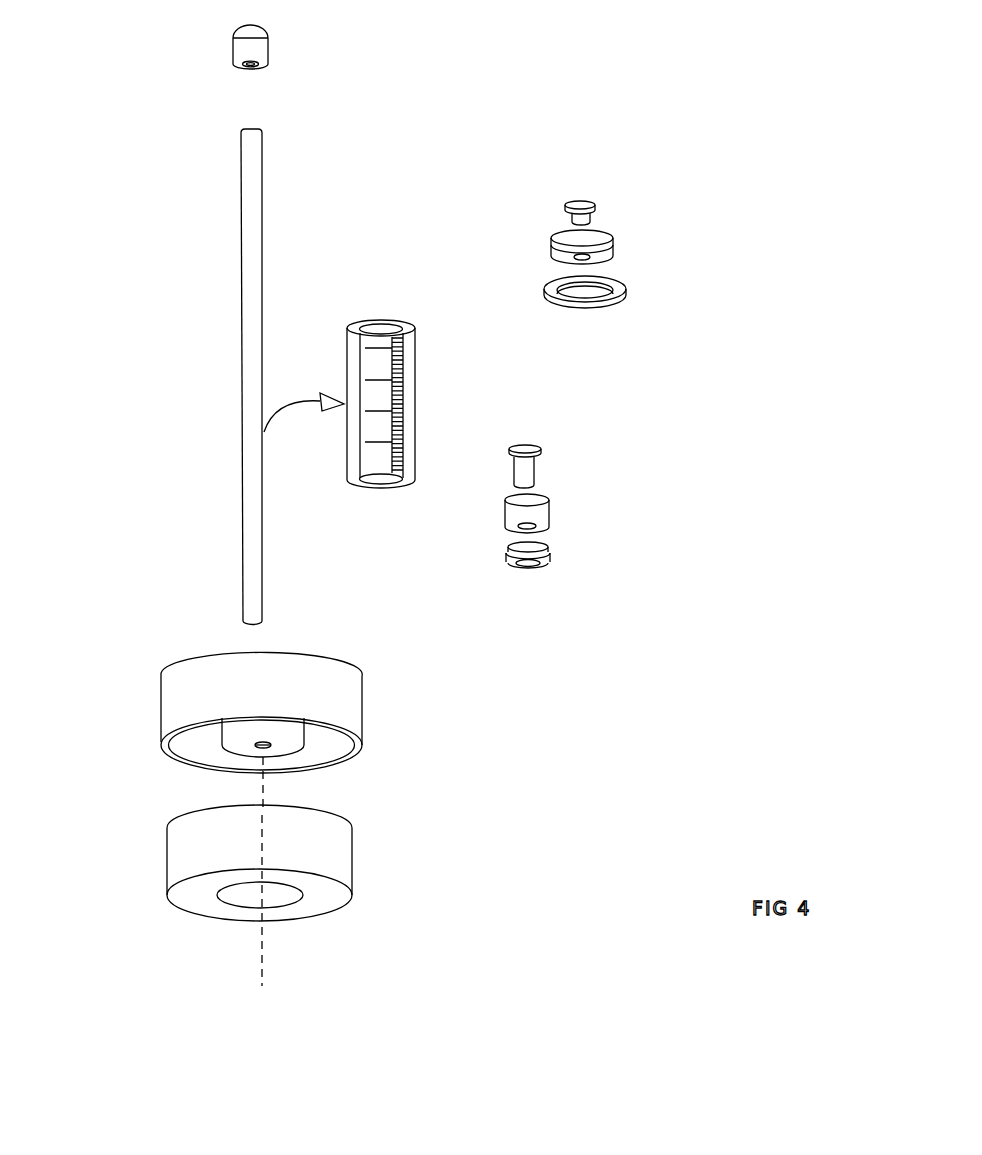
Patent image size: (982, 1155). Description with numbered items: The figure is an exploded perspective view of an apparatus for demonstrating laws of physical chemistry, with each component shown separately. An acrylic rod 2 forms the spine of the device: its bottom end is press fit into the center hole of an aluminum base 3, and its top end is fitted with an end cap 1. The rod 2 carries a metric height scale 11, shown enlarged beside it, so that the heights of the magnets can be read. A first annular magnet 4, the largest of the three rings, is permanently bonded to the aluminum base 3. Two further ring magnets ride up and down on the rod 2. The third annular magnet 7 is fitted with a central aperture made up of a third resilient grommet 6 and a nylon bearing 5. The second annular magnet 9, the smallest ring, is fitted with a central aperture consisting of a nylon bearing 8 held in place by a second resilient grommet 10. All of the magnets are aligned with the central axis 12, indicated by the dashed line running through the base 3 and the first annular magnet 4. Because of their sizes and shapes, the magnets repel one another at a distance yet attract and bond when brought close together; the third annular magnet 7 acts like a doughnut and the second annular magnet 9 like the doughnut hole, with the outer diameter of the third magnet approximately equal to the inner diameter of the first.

The end cap 1 is at (268, 37).
The acrylic rod 2 is at (243, 391).
The aluminum base 3 is at (362, 704).
The first annular magnet 4 is at (352, 858).
The nylon bearing 5 is at (595, 205).
The third resilient grommet 6 is at (613, 238).
The third annular magnet 7 is at (626, 287).
The nylon bearing 8 is at (540, 460).
The second annular magnet 9 is at (549, 502).
The second resilient grommet 10 is at (550, 550).
The metric height scale 11 is at (378, 355).
The central axis 12 is at (264, 962).